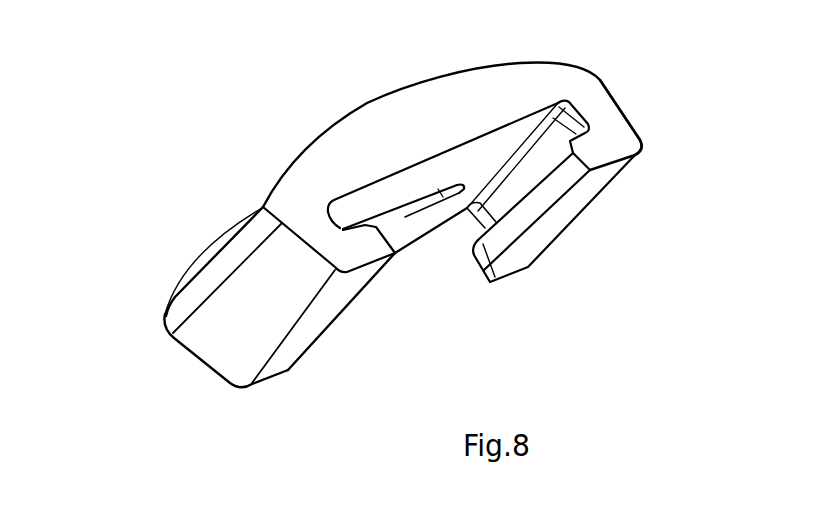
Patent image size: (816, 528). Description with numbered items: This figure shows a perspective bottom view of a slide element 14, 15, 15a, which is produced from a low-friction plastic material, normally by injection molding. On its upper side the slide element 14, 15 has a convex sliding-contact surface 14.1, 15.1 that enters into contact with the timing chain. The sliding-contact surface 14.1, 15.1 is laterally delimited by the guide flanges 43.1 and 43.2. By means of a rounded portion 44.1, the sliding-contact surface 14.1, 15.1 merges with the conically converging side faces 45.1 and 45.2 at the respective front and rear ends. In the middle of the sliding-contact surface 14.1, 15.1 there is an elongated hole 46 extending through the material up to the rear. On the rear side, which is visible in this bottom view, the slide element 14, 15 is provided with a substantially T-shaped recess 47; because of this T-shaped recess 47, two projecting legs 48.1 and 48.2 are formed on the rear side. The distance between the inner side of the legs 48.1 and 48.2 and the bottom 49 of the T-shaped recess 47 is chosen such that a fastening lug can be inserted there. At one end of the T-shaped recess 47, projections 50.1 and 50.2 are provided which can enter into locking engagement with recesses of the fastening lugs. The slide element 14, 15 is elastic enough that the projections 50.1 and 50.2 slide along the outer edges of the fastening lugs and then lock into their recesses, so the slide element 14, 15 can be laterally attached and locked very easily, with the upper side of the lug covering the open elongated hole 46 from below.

The slide element 14 is at (456, 214).
The slide element 15 is at (456, 214).
The spring clip 15a is at (612, 345).
The sliding-contact surface 14.1 is at (225, 284).
The sliding-contact surface 15.1 is at (256, 207).
The guide flange 43.1 is at (268, 207).
The guide flange 43.2 is at (192, 260).
The rounded portion 44.1 is at (193, 297).
The conically converging side face 45.1 is at (228, 308).
The conically converging side face 45.2 is at (616, 90).
The elongated hole 46 is at (406, 207).
The T-shaped recess 47 is at (423, 298).
The projecting leg 48.1 is at (365, 246).
The projecting leg 48.2 is at (592, 168).
The bottom of the T-shaped recess 49 is at (474, 162).
The projection 50.1 is at (331, 207).
The projection 50.2 is at (577, 125).